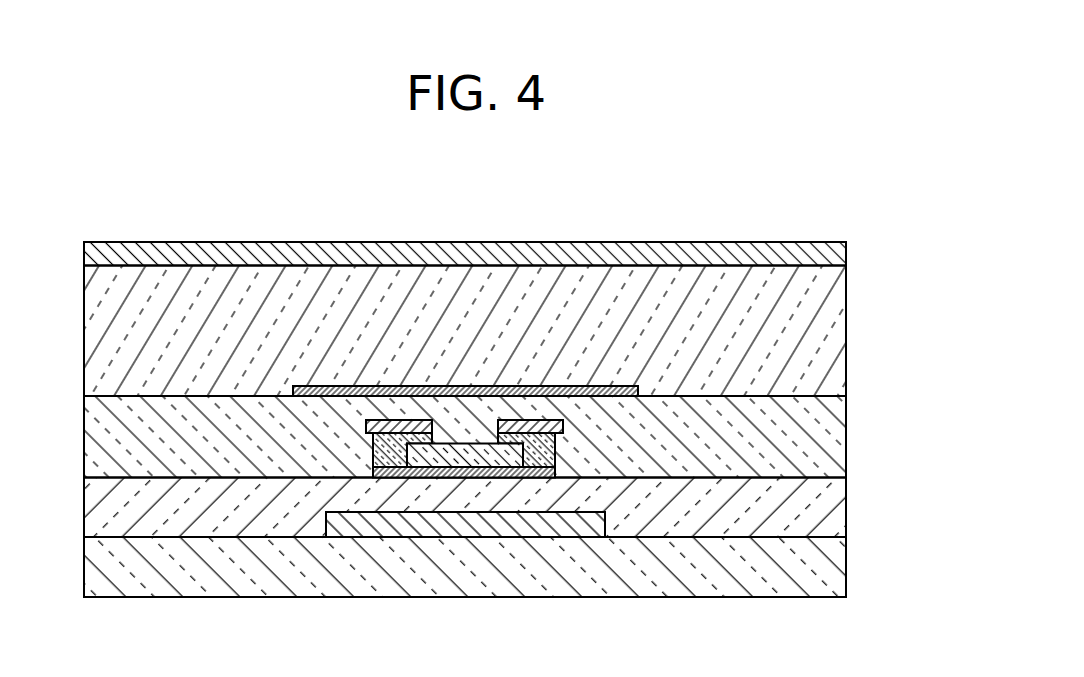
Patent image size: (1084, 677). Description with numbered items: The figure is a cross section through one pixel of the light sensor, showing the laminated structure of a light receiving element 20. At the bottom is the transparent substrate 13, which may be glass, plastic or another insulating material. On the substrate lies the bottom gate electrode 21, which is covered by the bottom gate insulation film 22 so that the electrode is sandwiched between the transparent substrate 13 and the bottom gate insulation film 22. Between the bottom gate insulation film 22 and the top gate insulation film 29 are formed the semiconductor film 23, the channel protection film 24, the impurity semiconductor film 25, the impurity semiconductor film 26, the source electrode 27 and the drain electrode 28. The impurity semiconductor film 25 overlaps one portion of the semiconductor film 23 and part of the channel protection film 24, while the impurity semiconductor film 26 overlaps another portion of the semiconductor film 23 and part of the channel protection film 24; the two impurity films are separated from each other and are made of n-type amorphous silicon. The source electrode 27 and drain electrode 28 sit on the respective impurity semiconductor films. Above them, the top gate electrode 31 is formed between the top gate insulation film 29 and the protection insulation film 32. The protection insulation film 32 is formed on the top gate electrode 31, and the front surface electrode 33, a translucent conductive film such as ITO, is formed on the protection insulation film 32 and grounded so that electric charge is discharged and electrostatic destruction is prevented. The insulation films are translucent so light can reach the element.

The transparent substrate 13 is at (833, 575).
The light receiving element 20 is at (534, 416).
The bottom gate electrode 21 is at (527, 528).
The bottom gate insulation film 22 is at (833, 517).
The semiconductor film 23 is at (447, 473).
The channel protection film 24 is at (483, 443).
The impurity semiconductor film 25 is at (545, 460).
The impurity semiconductor film 26 is at (387, 460).
The source electrode 27 is at (537, 420).
The drain electrode 28 is at (390, 420).
The top gate insulation film 29 is at (833, 440).
The top gate electrode 31 is at (440, 386).
The protection insulation film 32 is at (833, 326).
The front surface electrode 33 is at (833, 255).